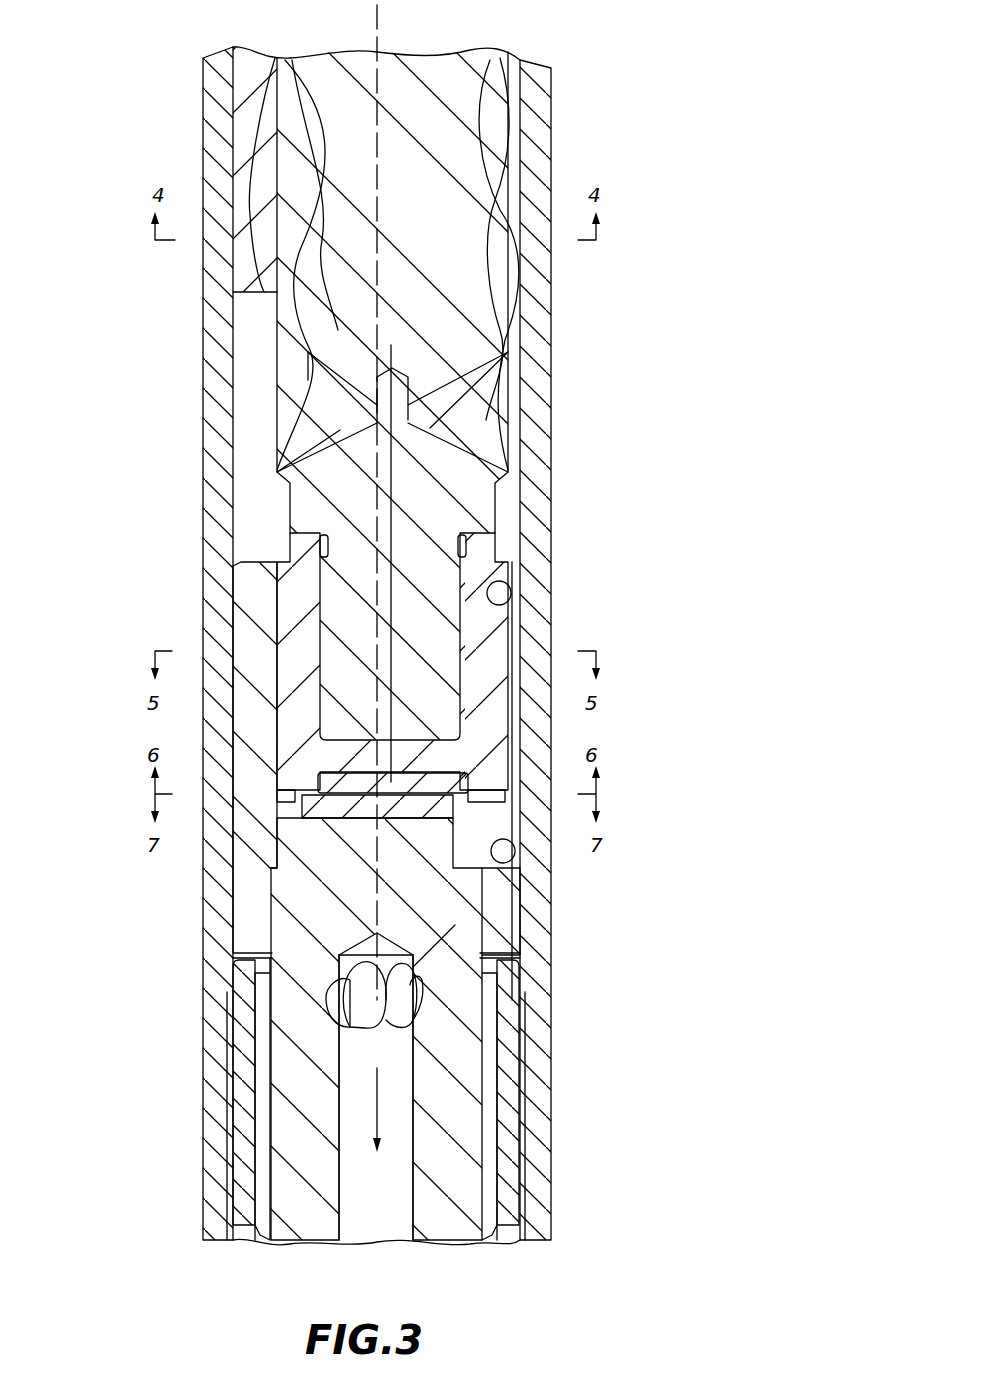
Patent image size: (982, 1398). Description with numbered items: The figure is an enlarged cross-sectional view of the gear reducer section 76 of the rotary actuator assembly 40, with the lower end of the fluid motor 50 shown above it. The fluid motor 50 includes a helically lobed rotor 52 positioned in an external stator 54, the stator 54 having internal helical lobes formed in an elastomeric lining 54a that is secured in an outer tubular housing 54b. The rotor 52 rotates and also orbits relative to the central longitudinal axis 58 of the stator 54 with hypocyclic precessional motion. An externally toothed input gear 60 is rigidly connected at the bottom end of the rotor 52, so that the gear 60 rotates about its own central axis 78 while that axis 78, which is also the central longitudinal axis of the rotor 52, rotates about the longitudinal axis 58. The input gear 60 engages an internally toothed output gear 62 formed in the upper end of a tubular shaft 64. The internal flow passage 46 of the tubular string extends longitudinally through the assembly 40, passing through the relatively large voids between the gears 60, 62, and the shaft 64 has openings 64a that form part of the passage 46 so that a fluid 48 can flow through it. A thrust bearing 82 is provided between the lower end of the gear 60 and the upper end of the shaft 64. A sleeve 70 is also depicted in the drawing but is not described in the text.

The rotary actuator assembly 40 is at (704, 60).
The internal flow passage 46 is at (355, 1083).
The fluid 48 is at (380, 1123).
The fluid motor 50 is at (200, 338).
The rotor 52 is at (507, 118).
The stator 54 is at (203, 72).
The elastomeric lining 54a is at (233, 278).
The outer tubular housing 54b is at (552, 480).
The central longitudinal axis 58 is at (377, 257).
The input gear 60 is at (277, 592).
The output gear 62 is at (506, 600).
The tubular shaft 64 is at (483, 1040).
The openings 64a is at (510, 856).
The sleeve 70 is at (257, 1027).
The gear reducer section 76 is at (560, 722).
The central axis 78 is at (394, 533).
The thrust bearing 82 is at (362, 820).